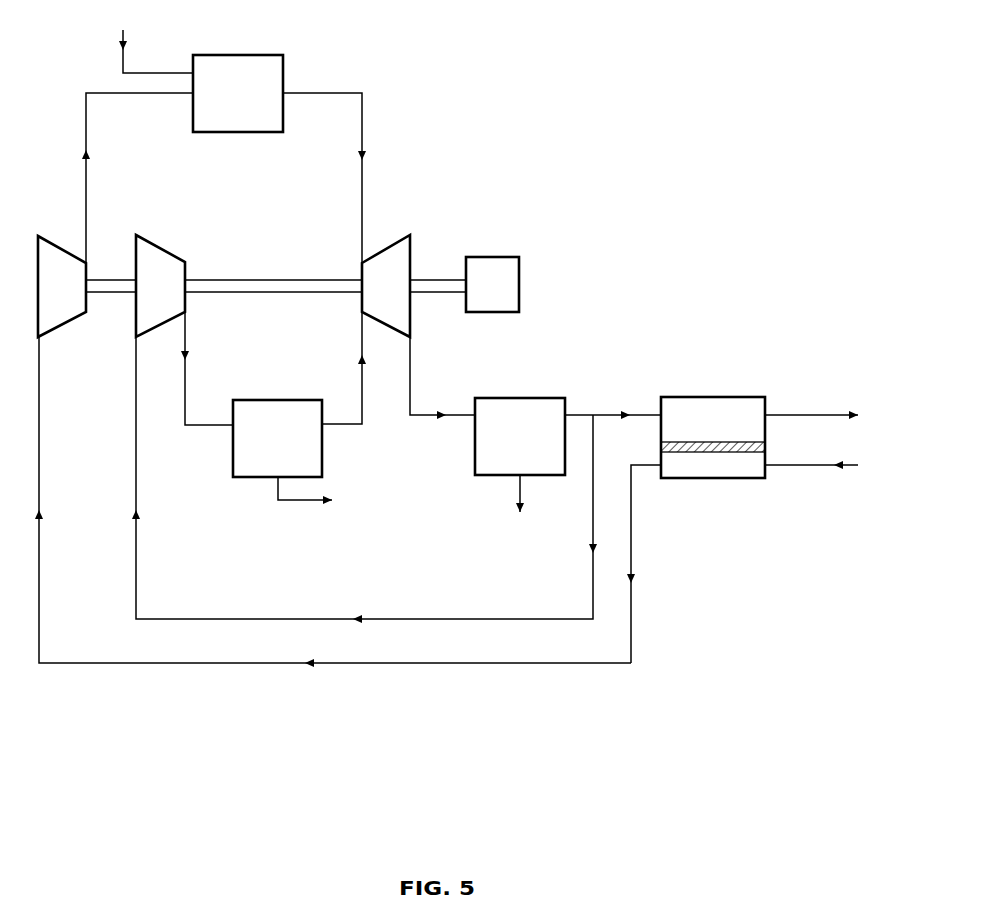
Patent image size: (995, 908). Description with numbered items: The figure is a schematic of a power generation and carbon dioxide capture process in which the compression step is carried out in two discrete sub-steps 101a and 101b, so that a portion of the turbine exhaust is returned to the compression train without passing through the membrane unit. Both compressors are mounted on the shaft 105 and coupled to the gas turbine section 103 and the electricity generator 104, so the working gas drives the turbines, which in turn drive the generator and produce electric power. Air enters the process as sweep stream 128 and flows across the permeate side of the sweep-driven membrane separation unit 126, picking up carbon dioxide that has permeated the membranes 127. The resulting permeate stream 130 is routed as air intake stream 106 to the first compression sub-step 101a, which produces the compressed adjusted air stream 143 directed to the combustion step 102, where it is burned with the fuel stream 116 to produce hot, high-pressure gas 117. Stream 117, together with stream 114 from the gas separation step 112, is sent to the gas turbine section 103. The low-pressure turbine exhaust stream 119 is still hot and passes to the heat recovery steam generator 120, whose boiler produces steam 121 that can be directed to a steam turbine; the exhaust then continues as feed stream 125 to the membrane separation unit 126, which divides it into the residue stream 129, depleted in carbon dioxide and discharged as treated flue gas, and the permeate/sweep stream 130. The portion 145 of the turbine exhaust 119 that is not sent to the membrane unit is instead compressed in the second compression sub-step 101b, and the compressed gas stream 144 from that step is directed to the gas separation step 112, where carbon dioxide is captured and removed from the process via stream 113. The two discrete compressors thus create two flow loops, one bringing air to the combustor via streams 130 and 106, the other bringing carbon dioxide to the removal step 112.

The compression sub-step 101a is at (52, 236).
The compression sub-step 101b is at (150, 235).
The combustion step 102 is at (258, 55).
The gas turbine section 103 is at (393, 242).
The electricity generator 104 is at (500, 257).
The shaft 105 is at (448, 277).
The air intake stream 106 is at (333, 502).
The gas separation step 112 is at (323, 457).
The carbon dioxide removal stream 113 is at (329, 495).
The stream from gas separation step 114 is at (344, 368).
The fuel stream 116 is at (150, 41).
The hot, high-pressure gas stream 117 is at (346, 178).
The turbine exhaust stream 119 is at (442, 391).
The heat recovery steam generator 120 is at (522, 398).
The steam 121 is at (521, 508).
The feed stream 125 is at (613, 401).
The sweep-driven membrane separation unit 126 is at (718, 397).
The membranes 127 is at (767, 448).
The air sweep stream 128 is at (834, 464).
The residue stream 129 is at (834, 414).
The permeate stream 130 is at (651, 564).
The compressed adjusted air stream 143 is at (137, 178).
The compressed gas stream 144 is at (207, 368).
The recycled turbine exhaust portion 145 is at (364, 480).